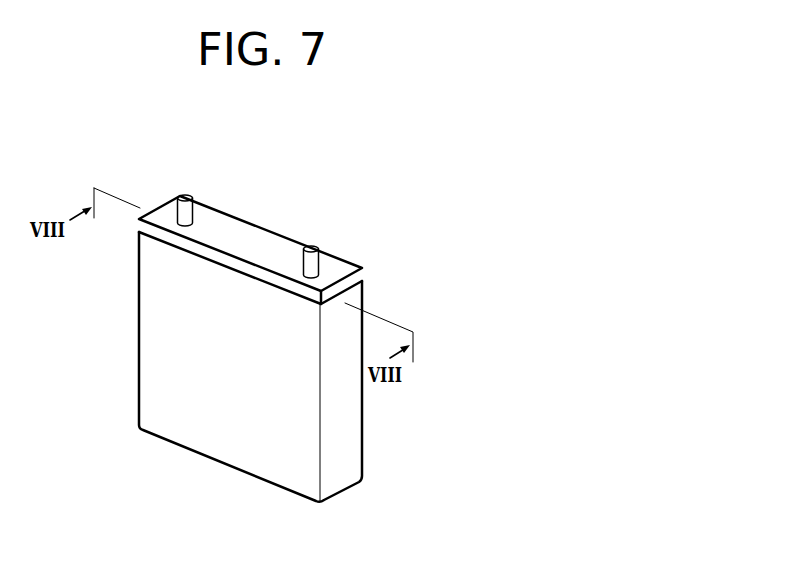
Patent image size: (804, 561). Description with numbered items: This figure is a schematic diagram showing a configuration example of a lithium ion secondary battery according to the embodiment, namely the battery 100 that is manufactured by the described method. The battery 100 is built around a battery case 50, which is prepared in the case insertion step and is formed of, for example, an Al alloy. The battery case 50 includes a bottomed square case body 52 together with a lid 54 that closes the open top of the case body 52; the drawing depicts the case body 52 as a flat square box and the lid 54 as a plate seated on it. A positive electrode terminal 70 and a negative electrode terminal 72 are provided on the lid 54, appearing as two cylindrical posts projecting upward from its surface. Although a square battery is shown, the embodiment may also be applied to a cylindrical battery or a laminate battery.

The battery 100 is at (463, 163).
The battery case 50 is at (454, 263).
The case body 52 is at (357, 450).
The lid 54 is at (358, 280).
The positive electrode terminal 70 is at (185, 193).
The negative electrode terminal 72 is at (314, 246).